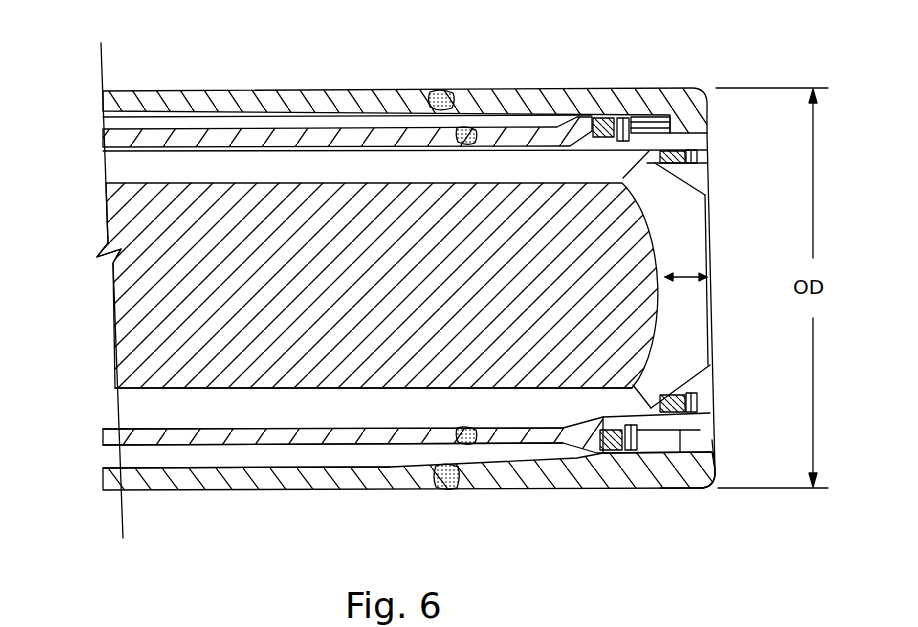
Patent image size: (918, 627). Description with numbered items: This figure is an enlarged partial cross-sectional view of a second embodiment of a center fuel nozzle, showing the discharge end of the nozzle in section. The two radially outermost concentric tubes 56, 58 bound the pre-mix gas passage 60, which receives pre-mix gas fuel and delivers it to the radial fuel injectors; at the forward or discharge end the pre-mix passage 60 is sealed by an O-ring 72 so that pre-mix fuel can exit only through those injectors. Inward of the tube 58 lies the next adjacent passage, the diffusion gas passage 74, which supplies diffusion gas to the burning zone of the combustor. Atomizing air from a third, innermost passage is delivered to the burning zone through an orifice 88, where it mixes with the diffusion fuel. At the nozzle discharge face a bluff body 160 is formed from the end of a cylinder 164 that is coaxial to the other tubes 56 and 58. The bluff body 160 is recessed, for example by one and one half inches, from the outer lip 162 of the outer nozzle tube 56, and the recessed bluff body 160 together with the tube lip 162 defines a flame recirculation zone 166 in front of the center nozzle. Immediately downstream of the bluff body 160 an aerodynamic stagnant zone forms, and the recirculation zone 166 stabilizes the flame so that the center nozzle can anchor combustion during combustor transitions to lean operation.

The bluff body 160 is at (363, 91).
The cylinder 164 is at (137, 211).
The flame recirculation zone 166 is at (683, 279).
The diffusion gas passage 74 is at (153, 410).
The concentric tube 58 is at (233, 437).
The pre-mix gas passage 60 is at (197, 456).
The outer nozzle tube 56 is at (281, 482).
The O-ring 72 is at (612, 455).
The orifice 88 is at (713, 392).
The outer lip 162 is at (718, 457).